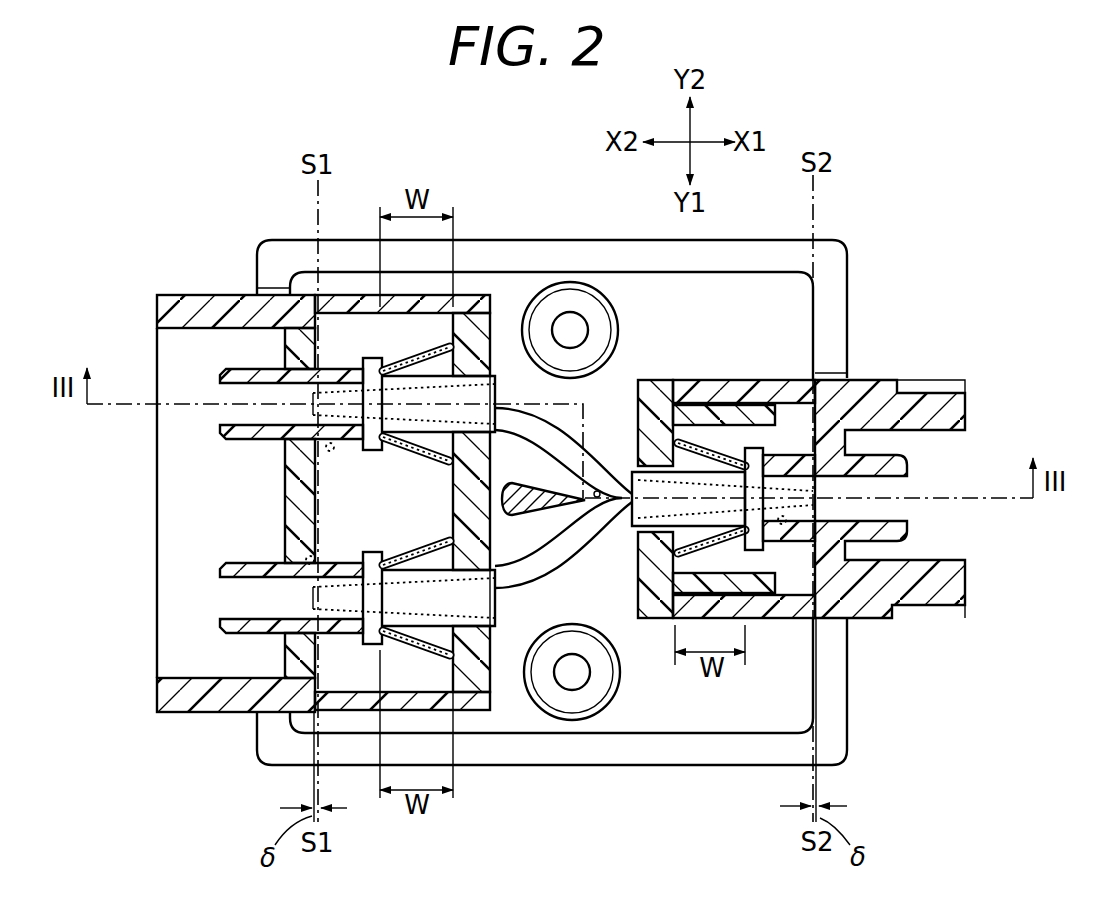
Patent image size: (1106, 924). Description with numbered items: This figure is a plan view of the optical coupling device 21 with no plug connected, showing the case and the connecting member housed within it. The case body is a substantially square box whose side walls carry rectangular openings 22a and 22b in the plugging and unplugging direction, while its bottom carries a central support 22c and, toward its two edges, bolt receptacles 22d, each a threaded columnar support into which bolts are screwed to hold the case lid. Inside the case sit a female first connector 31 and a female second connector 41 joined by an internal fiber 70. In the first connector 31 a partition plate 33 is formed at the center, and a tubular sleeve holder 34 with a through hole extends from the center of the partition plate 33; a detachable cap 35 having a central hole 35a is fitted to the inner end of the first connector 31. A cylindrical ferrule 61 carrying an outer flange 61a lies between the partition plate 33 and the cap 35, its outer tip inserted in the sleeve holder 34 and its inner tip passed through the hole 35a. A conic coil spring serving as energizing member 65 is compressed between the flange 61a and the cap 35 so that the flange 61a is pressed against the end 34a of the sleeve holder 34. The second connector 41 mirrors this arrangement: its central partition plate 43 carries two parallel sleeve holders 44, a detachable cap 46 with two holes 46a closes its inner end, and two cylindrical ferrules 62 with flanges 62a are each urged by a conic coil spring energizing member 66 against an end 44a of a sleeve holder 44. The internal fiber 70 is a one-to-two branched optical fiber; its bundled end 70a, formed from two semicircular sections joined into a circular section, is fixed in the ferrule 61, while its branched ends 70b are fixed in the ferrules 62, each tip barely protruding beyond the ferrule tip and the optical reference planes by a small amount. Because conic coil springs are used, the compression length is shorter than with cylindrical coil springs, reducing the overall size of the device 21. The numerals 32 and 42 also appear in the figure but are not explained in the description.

The optical coupling device 21 is at (862, 241).
The rectangular opening 22a is at (851, 615).
The rectangular opening 22b is at (250, 713).
The support 22c is at (524, 513).
The bolt receptacle 22d is at (578, 305).
The first connector 31 is at (945, 392).
The recess 32 is at (955, 436).
The partition plate 33 is at (848, 545).
The sleeve holder 34 is at (893, 508).
The end of sleeve holder 34a is at (795, 462).
The cap 35 is at (640, 623).
The hole 35a is at (631, 468).
The second connector 41 is at (176, 313).
The lower wall 42 is at (176, 647).
The partition plate 43 is at (297, 520).
The sleeve holder 44 is at (238, 397).
The end of sleeve holder 44a is at (337, 369).
The cap 46 is at (481, 345).
The hole 46a is at (493, 367).
The ferrule 61 is at (662, 378).
The flange 61a is at (750, 446).
The ferrule 62 is at (490, 383).
The flange 62a is at (370, 550).
The energizing member 65 is at (702, 442).
The energizing member 66 is at (424, 548).
The internal fiber 70 is at (580, 555).
The bundled end 70a is at (592, 491).
The branched end 70b is at (328, 445).